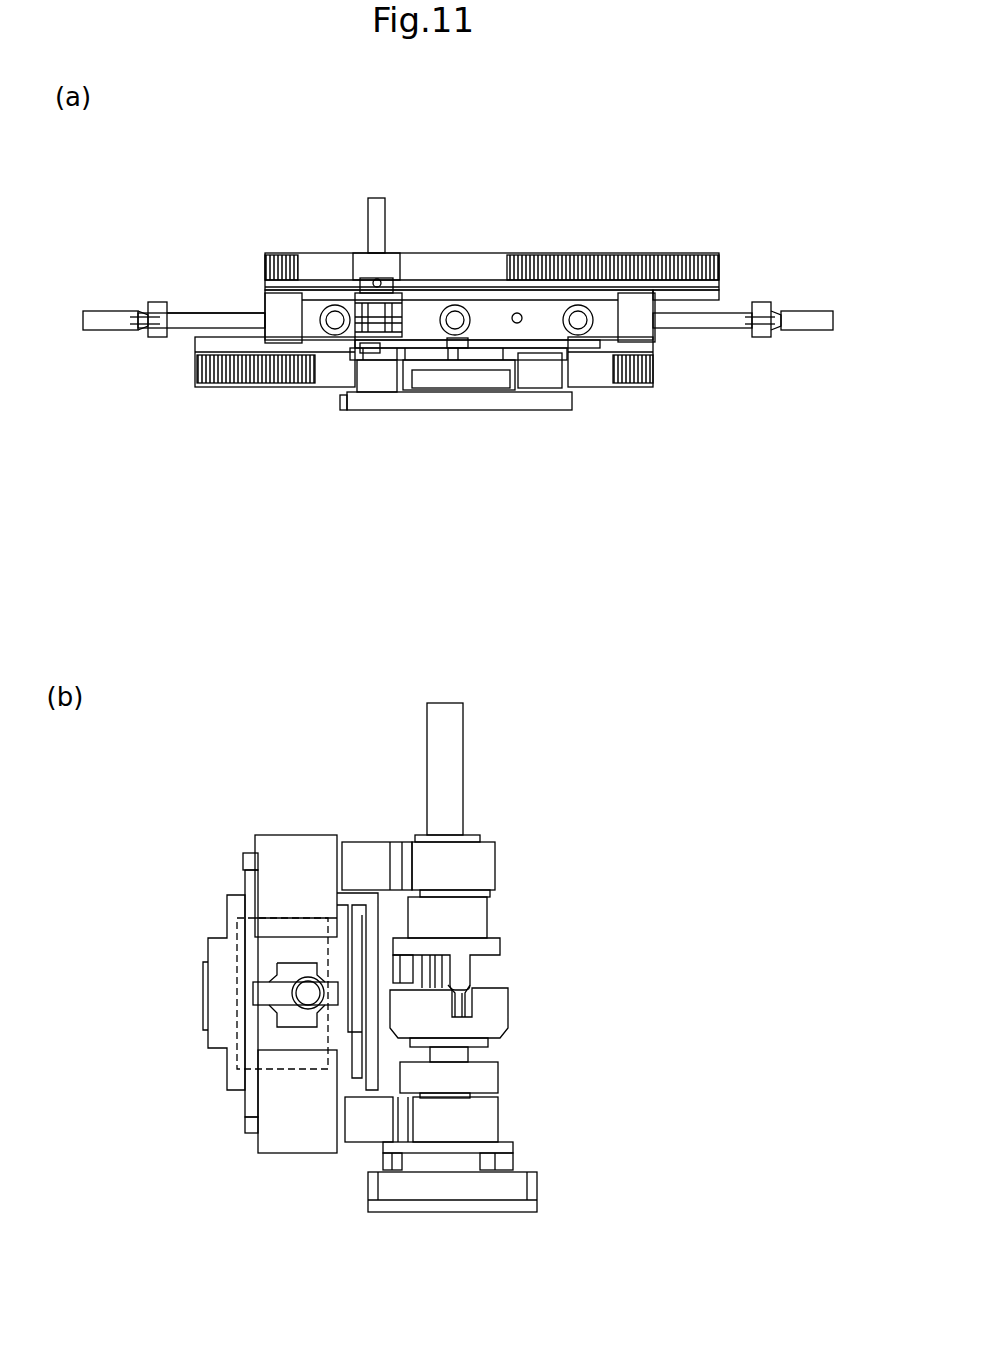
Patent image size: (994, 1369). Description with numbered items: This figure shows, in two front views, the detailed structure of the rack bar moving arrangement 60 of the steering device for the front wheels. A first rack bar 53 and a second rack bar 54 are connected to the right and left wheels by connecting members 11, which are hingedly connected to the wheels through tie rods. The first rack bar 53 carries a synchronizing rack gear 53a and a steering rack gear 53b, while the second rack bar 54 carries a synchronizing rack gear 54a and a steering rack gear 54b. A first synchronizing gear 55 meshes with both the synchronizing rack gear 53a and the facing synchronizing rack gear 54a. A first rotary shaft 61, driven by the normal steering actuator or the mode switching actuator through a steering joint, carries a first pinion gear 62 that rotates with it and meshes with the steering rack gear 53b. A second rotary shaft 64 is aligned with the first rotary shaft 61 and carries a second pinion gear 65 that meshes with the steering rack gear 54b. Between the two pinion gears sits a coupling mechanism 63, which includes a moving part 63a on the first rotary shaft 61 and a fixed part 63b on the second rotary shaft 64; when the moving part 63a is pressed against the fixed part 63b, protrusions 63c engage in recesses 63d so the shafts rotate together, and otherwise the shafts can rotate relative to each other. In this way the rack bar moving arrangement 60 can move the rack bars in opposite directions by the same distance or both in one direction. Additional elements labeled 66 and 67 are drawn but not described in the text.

The connecting member 11 is at (112, 322).
The first rack bar 53 is at (663, 248).
The synchronizing rack gear 53a is at (290, 930).
The steering rack gear 53b is at (606, 262).
The second rack bar 54 is at (275, 392).
The synchronizing rack gear 54a is at (257, 1048).
The steering rack gear 54b is at (235, 363).
The first synchronizing gear 55 is at (235, 995).
The rack bar moving arrangement 60 is at (398, 240).
The first rotary shaft 61 is at (372, 217).
The first pinion gear 62 is at (365, 265).
The coupling mechanism 63 is at (563, 238).
The moving part 63a is at (400, 305).
The fixed part 63b is at (405, 325).
The protrusions 63c is at (457, 968).
The recesses 63d is at (473, 990).
The second rotary shaft 64 is at (355, 345).
The second pinion gear 65 is at (378, 368).
The bracket 66 is at (375, 1123).
The slider 67 is at (373, 868).